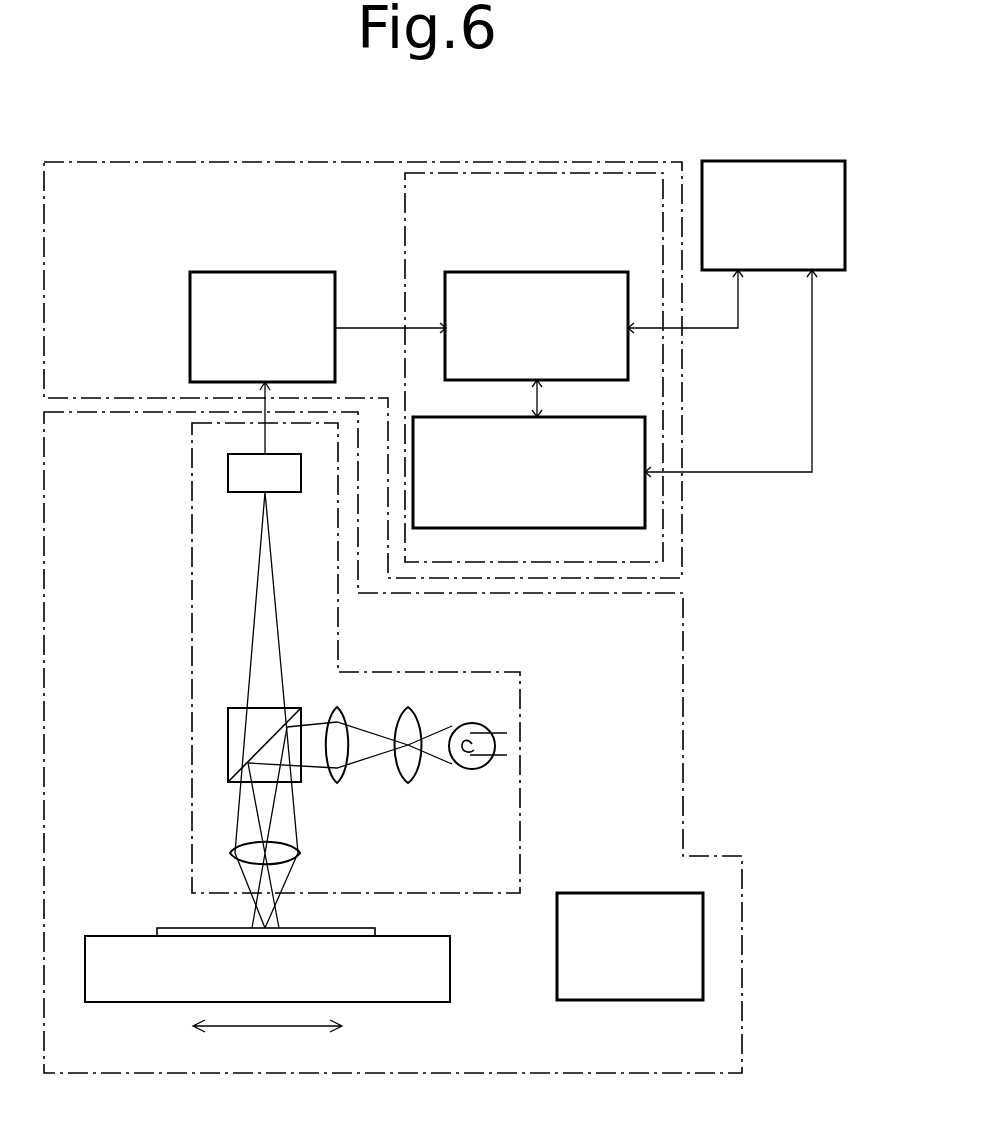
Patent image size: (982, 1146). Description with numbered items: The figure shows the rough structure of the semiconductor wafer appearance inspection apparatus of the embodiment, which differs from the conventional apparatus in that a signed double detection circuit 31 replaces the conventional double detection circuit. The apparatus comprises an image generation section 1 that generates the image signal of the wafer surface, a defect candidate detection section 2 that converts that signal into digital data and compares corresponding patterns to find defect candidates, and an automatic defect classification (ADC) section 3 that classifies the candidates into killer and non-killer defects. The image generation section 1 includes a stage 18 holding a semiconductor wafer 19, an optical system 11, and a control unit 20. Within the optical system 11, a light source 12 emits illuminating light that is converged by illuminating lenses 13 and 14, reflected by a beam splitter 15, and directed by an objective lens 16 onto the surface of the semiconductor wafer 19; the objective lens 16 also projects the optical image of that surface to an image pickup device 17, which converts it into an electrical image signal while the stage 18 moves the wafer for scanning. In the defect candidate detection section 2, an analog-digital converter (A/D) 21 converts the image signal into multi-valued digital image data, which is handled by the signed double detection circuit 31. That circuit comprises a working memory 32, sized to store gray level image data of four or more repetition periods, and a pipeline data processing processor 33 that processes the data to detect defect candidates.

The image generation section 1 is at (683, 748).
The defect candidate detection section 2 is at (548, 162).
The automatic defect classification (ADC) section 3 is at (760, 161).
The optical system 11 is at (520, 700).
The light source 12 is at (470, 723).
The illuminating lens 13 is at (432, 700).
The illuminating lens 14 is at (362, 700).
The beam splitter 15 is at (228, 728).
The objective lens 16 is at (300, 853).
The image pickup device 17 is at (236, 492).
The stage 18 is at (450, 972).
The semiconductor wafer 19 is at (375, 928).
The control unit 20 is at (625, 893).
The analog-digital converter (A/D) 21 is at (190, 322).
The signed double detection circuit 31 is at (405, 212).
The working memory 32 is at (596, 380).
The pipeline data processing processor 33 is at (600, 528).